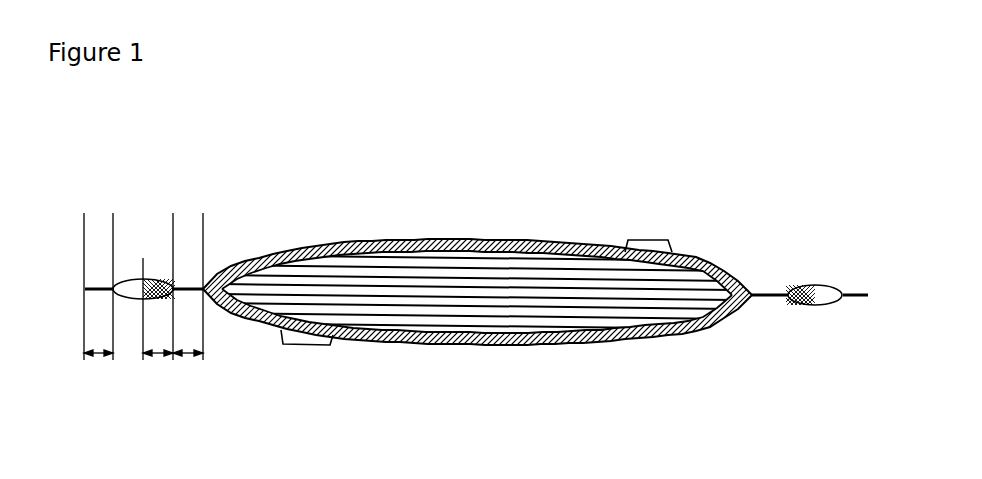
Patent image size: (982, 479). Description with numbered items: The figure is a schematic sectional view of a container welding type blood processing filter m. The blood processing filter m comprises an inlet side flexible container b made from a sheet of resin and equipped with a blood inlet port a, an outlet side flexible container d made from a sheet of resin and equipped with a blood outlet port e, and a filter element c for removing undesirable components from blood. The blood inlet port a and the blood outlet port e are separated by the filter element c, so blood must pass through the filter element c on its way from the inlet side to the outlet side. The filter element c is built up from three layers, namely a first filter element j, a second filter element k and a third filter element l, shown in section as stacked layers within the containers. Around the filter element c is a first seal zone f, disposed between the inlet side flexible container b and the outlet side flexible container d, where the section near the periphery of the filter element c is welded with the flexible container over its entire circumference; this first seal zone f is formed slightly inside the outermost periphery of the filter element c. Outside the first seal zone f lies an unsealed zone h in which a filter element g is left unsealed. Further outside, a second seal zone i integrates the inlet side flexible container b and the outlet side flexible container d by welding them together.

The blood inlet port a is at (652, 222).
The inlet side flexible container b is at (291, 240).
The filter element c is at (650, 322).
The outlet side flexible container d is at (469, 364).
The blood outlet port e is at (325, 361).
The first seal zone f is at (196, 363).
The unsealed filter element g is at (160, 367).
The unsealed zone h is at (173, 232).
The second seal zone i is at (94, 367).
The first filter element j is at (437, 247).
The second filter element k is at (496, 264).
The third filter element l is at (553, 314).
The blood processing filter m is at (771, 224).